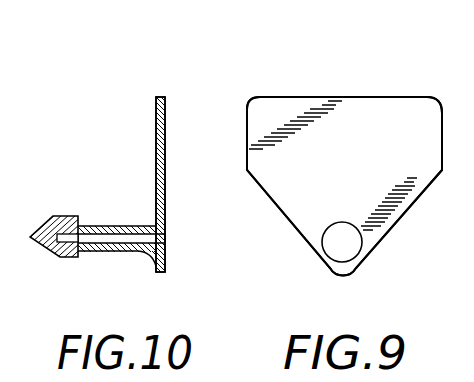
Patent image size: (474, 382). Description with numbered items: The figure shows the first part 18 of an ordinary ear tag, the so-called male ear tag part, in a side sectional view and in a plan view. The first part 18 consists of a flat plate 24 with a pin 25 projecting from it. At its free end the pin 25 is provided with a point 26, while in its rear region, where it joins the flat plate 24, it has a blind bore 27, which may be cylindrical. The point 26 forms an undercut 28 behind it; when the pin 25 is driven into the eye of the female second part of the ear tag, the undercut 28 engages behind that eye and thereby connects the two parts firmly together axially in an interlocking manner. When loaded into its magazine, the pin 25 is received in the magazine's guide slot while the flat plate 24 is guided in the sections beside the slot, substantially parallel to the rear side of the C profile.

In FIG. 10, the first part 18 is at (172, 128).
In FIG. 9, the first part 18 is at (341, 95).
In FIG. 10, the flat plate 24 is at (156, 130).
In FIG. 9, the flat plate 24 is at (383, 123).
In FIG. 10, the pin 25 is at (119, 226).
In FIG. 9, the pin 25 is at (350, 247).
In FIG. 10, the point 26 is at (48, 222).
In FIG. 10, the blind bore 27 is at (167, 240).
In FIG. 10, the undercut 28 is at (79, 258).